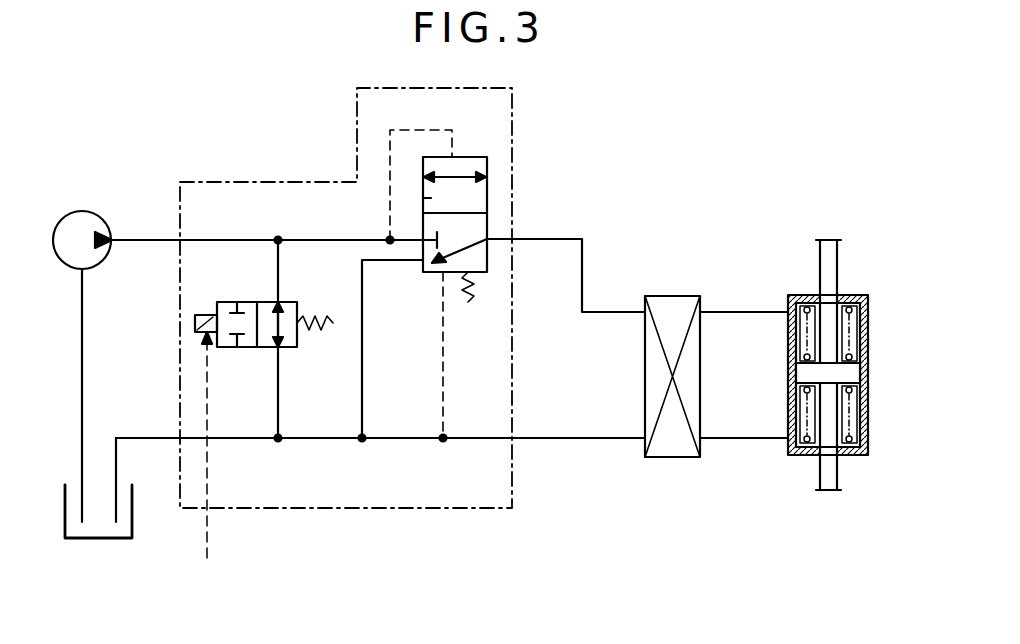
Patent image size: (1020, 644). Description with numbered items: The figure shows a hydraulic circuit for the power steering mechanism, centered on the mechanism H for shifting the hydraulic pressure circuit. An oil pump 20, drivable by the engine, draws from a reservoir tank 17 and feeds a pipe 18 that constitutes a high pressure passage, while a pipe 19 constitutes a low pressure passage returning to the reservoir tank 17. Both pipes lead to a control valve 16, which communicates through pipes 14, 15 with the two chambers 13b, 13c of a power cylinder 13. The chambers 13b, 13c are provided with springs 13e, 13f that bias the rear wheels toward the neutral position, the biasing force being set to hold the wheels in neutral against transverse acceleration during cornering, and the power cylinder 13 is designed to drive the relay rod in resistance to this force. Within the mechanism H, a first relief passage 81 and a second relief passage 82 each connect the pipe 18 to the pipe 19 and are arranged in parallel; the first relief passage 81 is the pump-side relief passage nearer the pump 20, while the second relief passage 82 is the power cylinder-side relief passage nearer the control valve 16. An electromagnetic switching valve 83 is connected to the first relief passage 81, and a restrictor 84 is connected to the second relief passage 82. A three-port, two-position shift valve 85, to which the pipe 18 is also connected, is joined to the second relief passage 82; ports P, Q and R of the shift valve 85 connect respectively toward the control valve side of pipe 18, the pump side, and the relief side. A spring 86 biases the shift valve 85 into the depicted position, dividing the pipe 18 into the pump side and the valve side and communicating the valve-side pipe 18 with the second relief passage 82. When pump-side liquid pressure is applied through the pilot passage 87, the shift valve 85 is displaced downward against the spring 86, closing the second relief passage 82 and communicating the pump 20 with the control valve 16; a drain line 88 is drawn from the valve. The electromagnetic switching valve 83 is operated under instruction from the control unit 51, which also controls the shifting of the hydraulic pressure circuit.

The power cylinder 13 is at (819, 397).
The chamber 13b is at (842, 406).
The chamber 13c is at (834, 300).
The spring 13e is at (866, 452).
The spring 13f is at (862, 320).
The pipe 14 is at (748, 440).
The pipe 15 is at (732, 310).
The control valve 16 is at (660, 294).
The reservoir tank 17 is at (60, 490).
The pipe 18 is at (140, 236).
The pipe 19 is at (558, 440).
The oil pump 20 is at (88, 212).
The control unit 51 is at (202, 469).
The first relief passage 81 is at (278, 402).
The second relief passage 82 is at (364, 324).
The electromagnetic switching valve 83 is at (226, 300).
The restrictor 84 is at (352, 352).
The shift valve 85 is at (496, 188).
The spring 86 is at (470, 306).
The pilot passage 87 is at (390, 148).
The pilot line 88 is at (444, 418).
The hydraulic pressure circuit shifting mechanism H is at (466, 510).
The port P is at (490, 237).
The port Q is at (420, 238).
The port R is at (422, 262).